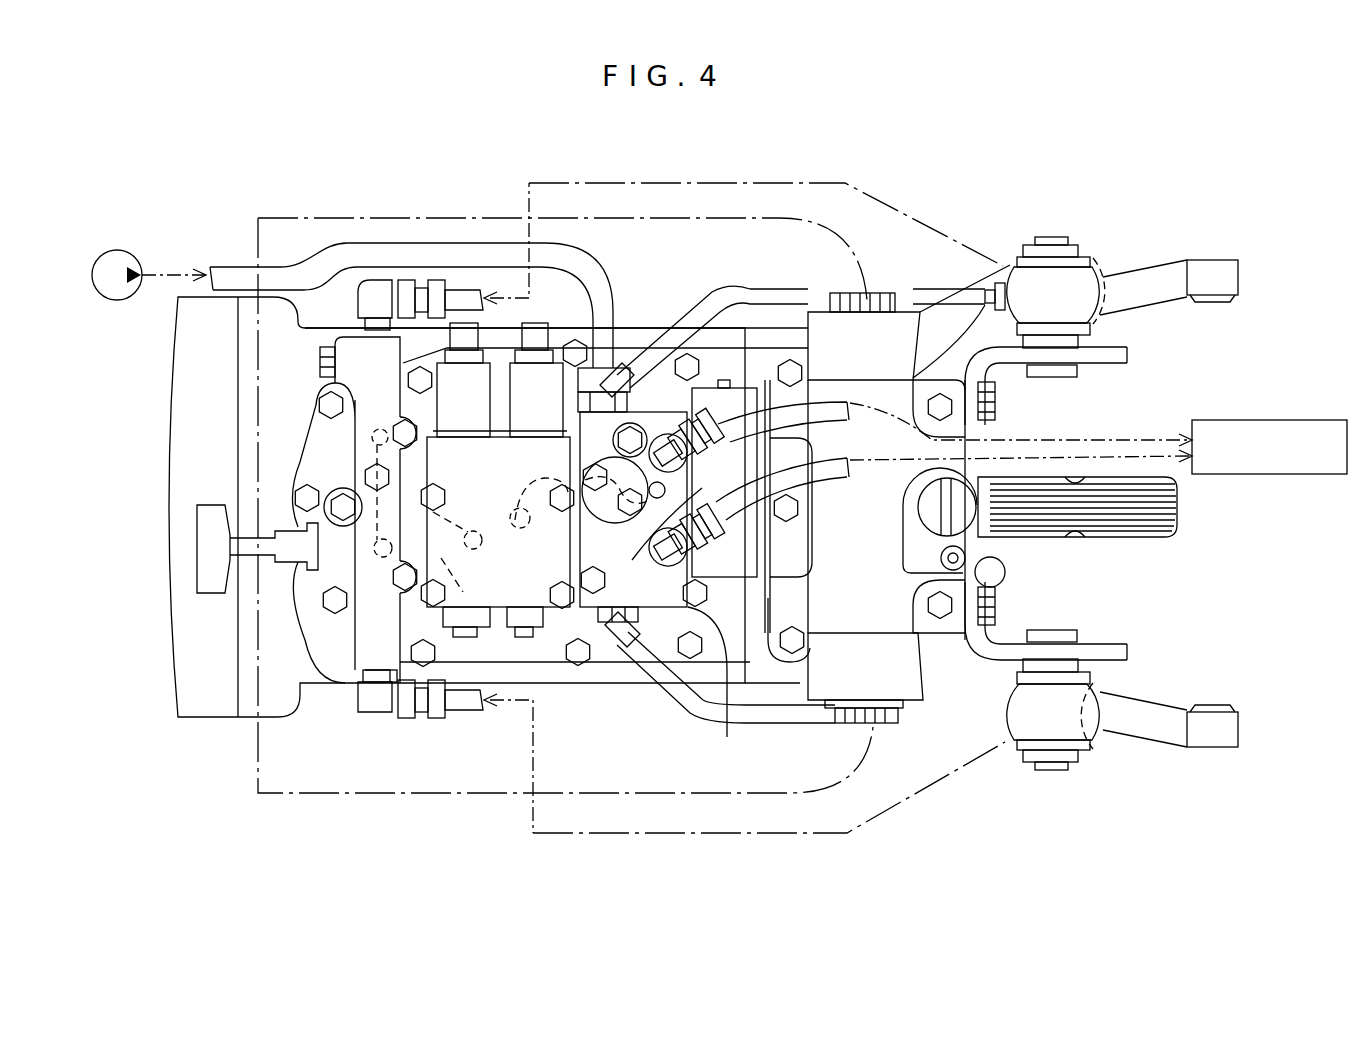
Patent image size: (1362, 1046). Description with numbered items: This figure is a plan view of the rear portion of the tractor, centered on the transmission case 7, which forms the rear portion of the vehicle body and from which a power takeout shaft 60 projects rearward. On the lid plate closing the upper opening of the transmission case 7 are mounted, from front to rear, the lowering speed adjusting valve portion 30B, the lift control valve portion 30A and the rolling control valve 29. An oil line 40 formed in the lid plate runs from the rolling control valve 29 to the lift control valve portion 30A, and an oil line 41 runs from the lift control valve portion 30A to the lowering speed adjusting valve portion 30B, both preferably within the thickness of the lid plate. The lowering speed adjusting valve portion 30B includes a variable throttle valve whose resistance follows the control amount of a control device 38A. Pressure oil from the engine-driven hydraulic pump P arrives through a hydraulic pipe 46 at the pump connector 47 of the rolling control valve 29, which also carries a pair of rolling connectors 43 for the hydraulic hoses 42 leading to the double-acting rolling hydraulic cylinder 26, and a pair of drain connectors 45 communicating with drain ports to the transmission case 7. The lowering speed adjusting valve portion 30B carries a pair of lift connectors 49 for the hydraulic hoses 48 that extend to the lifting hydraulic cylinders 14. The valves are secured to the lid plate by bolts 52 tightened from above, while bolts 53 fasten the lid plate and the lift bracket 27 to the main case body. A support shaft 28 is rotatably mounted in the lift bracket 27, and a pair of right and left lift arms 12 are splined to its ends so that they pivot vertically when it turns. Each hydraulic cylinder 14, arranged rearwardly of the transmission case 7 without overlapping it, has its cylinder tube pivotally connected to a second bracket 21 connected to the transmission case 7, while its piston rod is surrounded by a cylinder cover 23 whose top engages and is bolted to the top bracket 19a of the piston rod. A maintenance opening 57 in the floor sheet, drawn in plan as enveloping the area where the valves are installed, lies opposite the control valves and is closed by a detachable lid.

The hydraulic pump P is at (124, 251).
The transmission case 7 is at (302, 327).
The lift arms 12 is at (1160, 277).
The hydraulic cylinders 14 is at (1110, 299).
The top bracket 19a is at (1004, 266).
The second bracket 21 is at (1105, 363).
The cylinder cover 23 is at (1092, 260).
The hydraulic cylinder 26 is at (1288, 420).
The lift bracket 27 is at (772, 612).
The support shaft 28 is at (832, 293).
The rolling control valve 29 is at (685, 702).
The lift control valve portion 30A is at (523, 585).
The lowering speed adjusting valve portion 30B is at (363, 650).
The control device 38A is at (200, 578).
The oil line 40 is at (527, 490).
The oil line 41 is at (460, 554).
The hydraulic hoses 42 is at (822, 407).
The rolling connectors 43 is at (633, 509).
The drain connectors 45 is at (637, 393).
The hydraulic pipe 46 is at (402, 245).
The pump connector 47 is at (583, 403).
The hydraulic hoses 48 is at (462, 297).
The lift connectors 49 is at (372, 290).
The bolts 52 is at (395, 432).
The bolts 53 is at (788, 366).
The maintenance opening 57 is at (305, 795).
The power takeout shaft 60 is at (1140, 540).